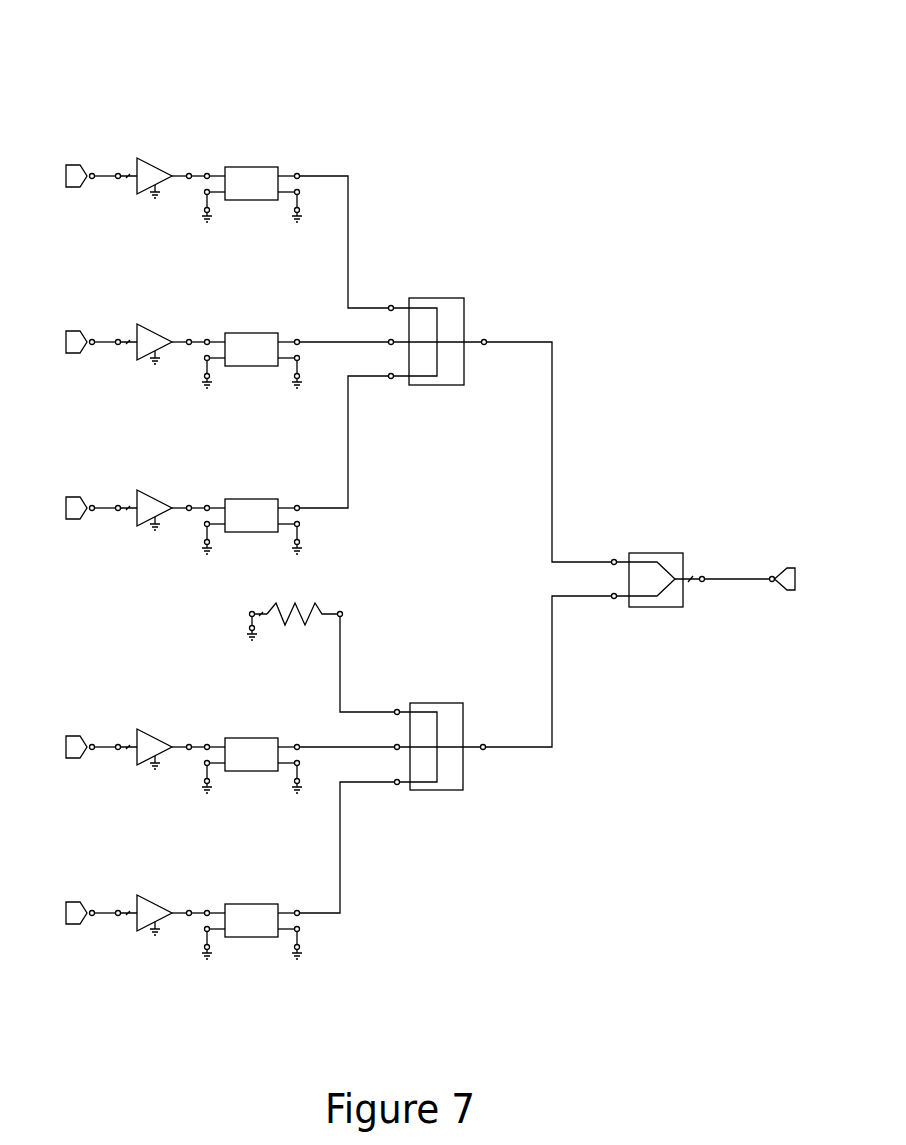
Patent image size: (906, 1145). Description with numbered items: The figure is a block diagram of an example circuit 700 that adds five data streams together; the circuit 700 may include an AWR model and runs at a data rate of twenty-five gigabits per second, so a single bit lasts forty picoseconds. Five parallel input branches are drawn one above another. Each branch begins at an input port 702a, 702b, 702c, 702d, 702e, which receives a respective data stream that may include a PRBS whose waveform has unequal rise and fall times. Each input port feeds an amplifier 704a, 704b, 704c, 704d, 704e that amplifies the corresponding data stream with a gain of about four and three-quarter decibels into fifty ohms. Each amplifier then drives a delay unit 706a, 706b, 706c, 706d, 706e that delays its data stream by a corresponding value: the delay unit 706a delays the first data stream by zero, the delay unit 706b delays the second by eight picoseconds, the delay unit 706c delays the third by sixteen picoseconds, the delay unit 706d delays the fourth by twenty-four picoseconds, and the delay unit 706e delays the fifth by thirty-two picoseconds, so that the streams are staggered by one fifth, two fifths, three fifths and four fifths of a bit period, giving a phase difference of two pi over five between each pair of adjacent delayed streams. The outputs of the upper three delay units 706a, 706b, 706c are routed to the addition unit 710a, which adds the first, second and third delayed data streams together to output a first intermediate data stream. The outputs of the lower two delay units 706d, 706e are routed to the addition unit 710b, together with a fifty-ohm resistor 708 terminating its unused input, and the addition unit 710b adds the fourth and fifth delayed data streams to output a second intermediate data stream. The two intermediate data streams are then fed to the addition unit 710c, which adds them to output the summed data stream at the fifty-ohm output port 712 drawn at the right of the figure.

The circuit 700 is at (81, 56).
The input port 702a is at (73, 187).
The input port 702b is at (73, 353).
The input port 702c is at (73, 519).
The input port 702d is at (73, 758).
The input port 702e is at (73, 924).
The amplifier 704a is at (147, 163).
The amplifier 704b is at (147, 329).
The amplifier 704c is at (147, 495).
The amplifier 704d is at (147, 734).
The amplifier 704e is at (153, 900).
The delay unit 706a is at (249, 167).
The delay unit 706b is at (249, 333).
The delay unit 706c is at (249, 499).
The delay unit 706d is at (249, 738).
The delay unit 706e is at (249, 904).
The resistor 708 is at (296, 602).
The addition unit 710a is at (453, 298).
The addition unit 710b is at (450, 703).
The addition unit 710c is at (663, 553).
The output port 712 is at (790, 568).